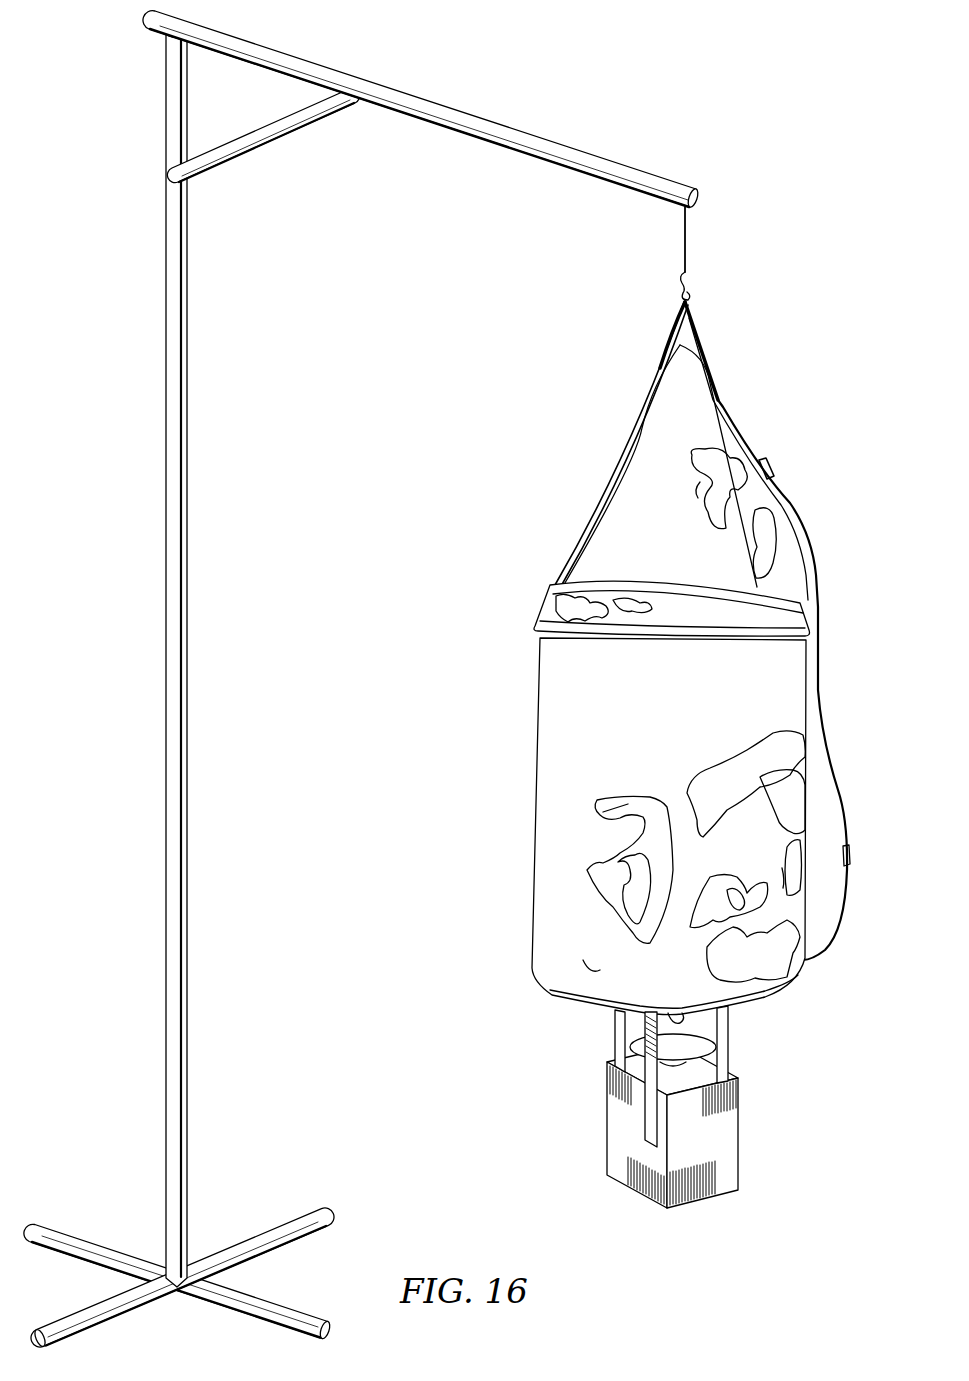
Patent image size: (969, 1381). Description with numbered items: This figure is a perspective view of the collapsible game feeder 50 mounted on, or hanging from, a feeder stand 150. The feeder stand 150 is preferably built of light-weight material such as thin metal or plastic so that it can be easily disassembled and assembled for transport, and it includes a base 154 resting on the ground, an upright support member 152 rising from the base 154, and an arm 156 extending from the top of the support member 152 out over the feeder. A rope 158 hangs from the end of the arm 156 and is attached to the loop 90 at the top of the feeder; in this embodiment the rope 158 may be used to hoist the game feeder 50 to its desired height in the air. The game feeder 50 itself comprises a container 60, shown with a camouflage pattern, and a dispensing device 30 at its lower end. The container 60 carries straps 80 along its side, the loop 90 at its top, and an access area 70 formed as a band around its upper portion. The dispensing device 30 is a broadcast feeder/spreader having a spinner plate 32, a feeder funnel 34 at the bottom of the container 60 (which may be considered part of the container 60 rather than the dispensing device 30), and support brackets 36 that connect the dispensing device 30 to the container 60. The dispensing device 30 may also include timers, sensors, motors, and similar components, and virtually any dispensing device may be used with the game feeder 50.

The dispensing device 30 is at (752, 1128).
The spinner plate 32 is at (696, 1042).
The feeder funnel 34 is at (676, 1014).
The support brackets 36 is at (615, 1037).
The game feeder 50 is at (774, 371).
The container 60 is at (687, 743).
The access area 70 is at (669, 572).
The straps 80 is at (790, 503).
The loop 90 is at (700, 332).
The feeder stand 150 is at (486, 112).
The support member 152 is at (166, 648).
The base 154 is at (105, 1252).
The arm 156 is at (633, 175).
The rope 158 is at (688, 243).